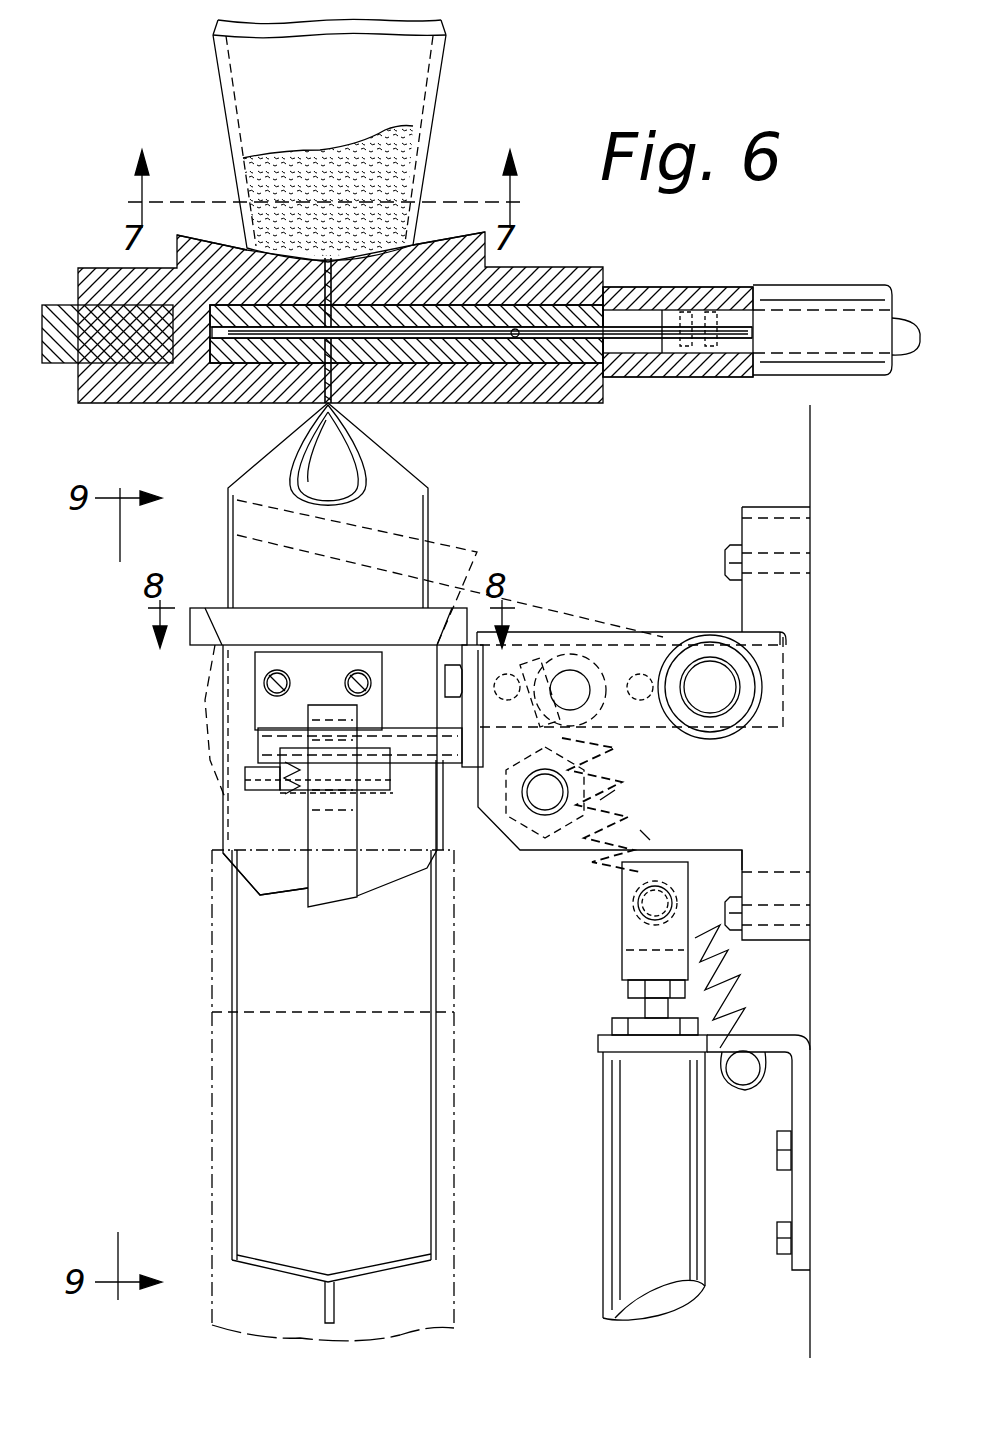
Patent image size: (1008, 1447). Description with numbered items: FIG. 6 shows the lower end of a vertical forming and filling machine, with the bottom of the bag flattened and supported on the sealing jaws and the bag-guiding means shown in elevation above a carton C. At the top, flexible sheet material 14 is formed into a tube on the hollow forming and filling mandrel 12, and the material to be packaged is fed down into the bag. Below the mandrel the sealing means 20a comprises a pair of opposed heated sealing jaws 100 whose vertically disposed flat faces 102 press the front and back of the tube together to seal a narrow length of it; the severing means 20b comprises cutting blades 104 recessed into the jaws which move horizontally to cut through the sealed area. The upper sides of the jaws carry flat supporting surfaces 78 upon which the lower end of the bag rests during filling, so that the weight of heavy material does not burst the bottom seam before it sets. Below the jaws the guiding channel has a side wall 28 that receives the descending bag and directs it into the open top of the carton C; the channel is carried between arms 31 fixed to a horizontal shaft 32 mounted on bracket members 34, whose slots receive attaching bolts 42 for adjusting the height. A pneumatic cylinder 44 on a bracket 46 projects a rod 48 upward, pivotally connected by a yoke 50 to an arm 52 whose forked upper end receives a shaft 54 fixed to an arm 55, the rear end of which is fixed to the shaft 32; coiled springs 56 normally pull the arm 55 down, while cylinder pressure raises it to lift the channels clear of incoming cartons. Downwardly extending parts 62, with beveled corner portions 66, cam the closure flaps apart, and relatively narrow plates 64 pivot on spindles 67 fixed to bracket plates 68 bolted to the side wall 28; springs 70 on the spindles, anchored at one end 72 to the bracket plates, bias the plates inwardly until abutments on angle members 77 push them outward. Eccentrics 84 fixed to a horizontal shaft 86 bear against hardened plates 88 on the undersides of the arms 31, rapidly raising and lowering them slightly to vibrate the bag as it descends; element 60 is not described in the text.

The forming and filling mandrel 12 is at (444, 24).
The flexible sheet material 14 is at (438, 82).
The flat supporting surfaces 78 is at (218, 240).
The sealing means 20a is at (538, 257).
The severing means 20b is at (623, 337).
The cutting blades 104 is at (233, 338).
The sealing jaws 100 is at (170, 405).
The flat faces 102 is at (322, 393).
The bracket members 34 is at (750, 506).
The attaching bolts 42 is at (727, 556).
The arms 31 is at (528, 606).
The shaft 54 is at (573, 652).
The arm 55 is at (632, 652).
The spring anchoring end 72 is at (298, 695).
The bracket plates 68 is at (258, 700).
The angle members 77 is at (470, 718).
The spindles 67 is at (245, 776).
The side wall 28 is at (226, 812).
The springs 70 is at (292, 786).
The narrow plates 64 is at (350, 860).
The block 60 is at (440, 762).
The downwardly extending parts 62 is at (282, 880).
The beveled corner portions 66 is at (230, 858).
The hardened plates 88 is at (495, 818).
The horizontal shaft 32 is at (730, 714).
The arm 52 is at (648, 791).
The coiled springs 56 is at (652, 822).
The horizontal shaft 86 is at (540, 808).
The eccentrics 84 is at (558, 832).
The yoke 50 is at (622, 958).
The rod 48 is at (645, 1008).
The pneumatic cylinder 44 is at (606, 1112).
The bracket 46 is at (796, 1108).
The cartons C is at (212, 1048).